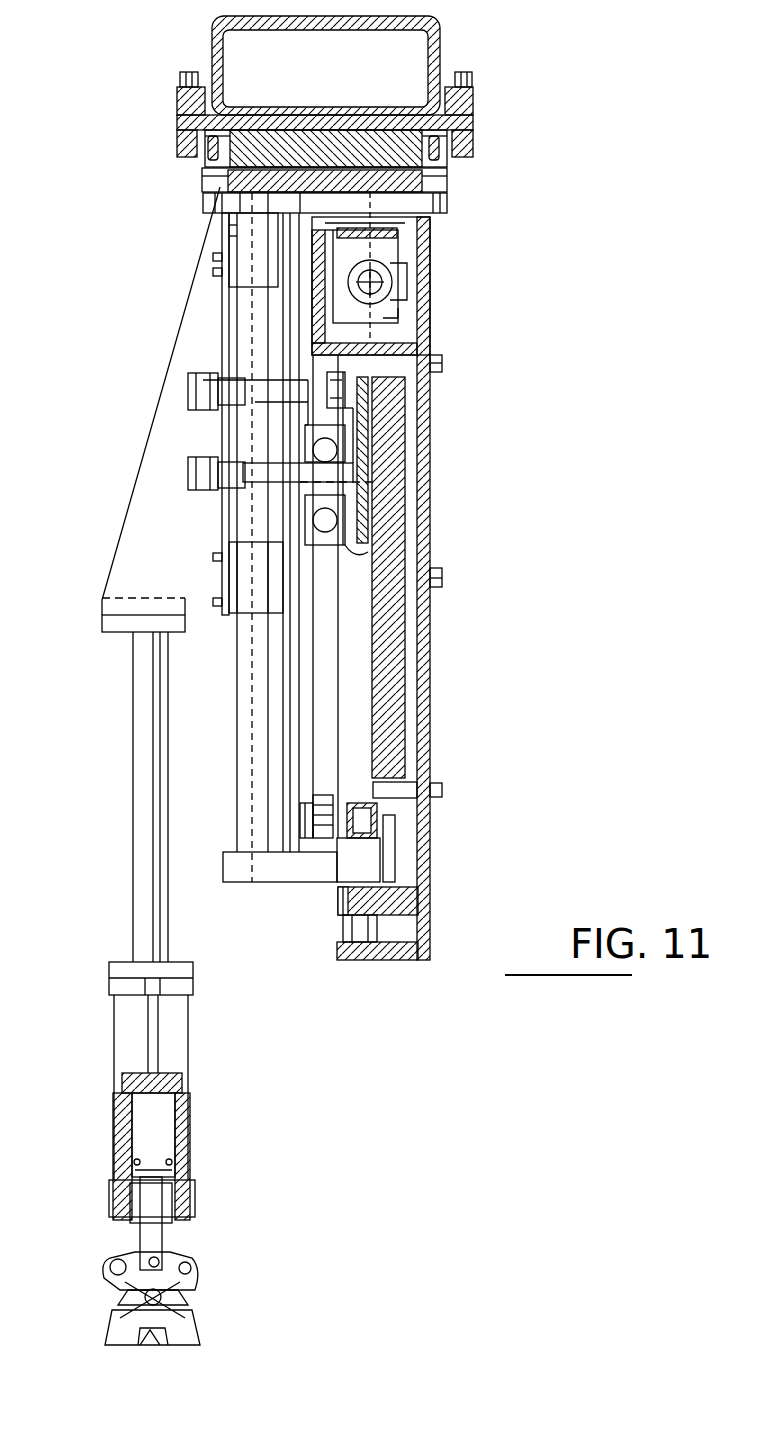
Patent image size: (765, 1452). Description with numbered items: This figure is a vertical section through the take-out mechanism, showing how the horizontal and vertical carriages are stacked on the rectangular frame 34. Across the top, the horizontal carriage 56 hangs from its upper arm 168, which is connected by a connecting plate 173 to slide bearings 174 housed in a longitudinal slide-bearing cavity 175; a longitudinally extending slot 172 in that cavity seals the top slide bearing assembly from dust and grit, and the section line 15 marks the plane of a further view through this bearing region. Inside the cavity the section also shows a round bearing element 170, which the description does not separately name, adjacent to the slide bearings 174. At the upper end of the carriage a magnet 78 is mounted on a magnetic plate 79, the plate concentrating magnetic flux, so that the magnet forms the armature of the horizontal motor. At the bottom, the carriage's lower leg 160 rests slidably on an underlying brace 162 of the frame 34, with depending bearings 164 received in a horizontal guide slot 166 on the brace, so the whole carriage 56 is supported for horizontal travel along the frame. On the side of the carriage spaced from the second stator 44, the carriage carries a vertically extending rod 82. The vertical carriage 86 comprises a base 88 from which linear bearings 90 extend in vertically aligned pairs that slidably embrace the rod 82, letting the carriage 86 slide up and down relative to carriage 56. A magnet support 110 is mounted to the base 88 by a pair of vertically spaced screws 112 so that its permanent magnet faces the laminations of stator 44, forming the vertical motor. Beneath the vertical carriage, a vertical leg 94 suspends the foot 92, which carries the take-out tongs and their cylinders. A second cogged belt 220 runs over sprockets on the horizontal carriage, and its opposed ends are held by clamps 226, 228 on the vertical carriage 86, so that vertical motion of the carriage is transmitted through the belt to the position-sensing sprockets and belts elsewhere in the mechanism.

The section line 15- 15 is at (407, 174).
The rectangular frame 34 is at (437, 688).
The second stator 44 is at (403, 643).
The horizontal carriage 56 is at (278, 441).
The magnet 78 is at (205, 171).
The magnetic plate 79 is at (205, 183).
The rod 82 is at (256, 745).
The vertical carriage 86 is at (104, 628).
The base 88 is at (222, 500).
The linear bearings 90 is at (255, 245).
The foot 92 is at (115, 969).
The vertical leg 94 is at (140, 775).
The magnet support 110 is at (362, 567).
The screws 112 is at (188, 468).
The lower leg 160 is at (298, 875).
The brace 162 is at (415, 885).
The depending bearings 164 is at (345, 905).
The horizontal guide slot 166 is at (362, 930).
The upper arm 168 is at (447, 200).
The roller 170 is at (382, 280).
The longitudinally extending slot 172 is at (370, 235).
The connecting plate 173 is at (423, 232).
The slide bearings 174 is at (398, 291).
The slide-bearing cavity 175 is at (378, 335).
The second cogged belt 220 is at (325, 713).
The clamp 226 is at (340, 449).
The clamp 228 is at (340, 521).